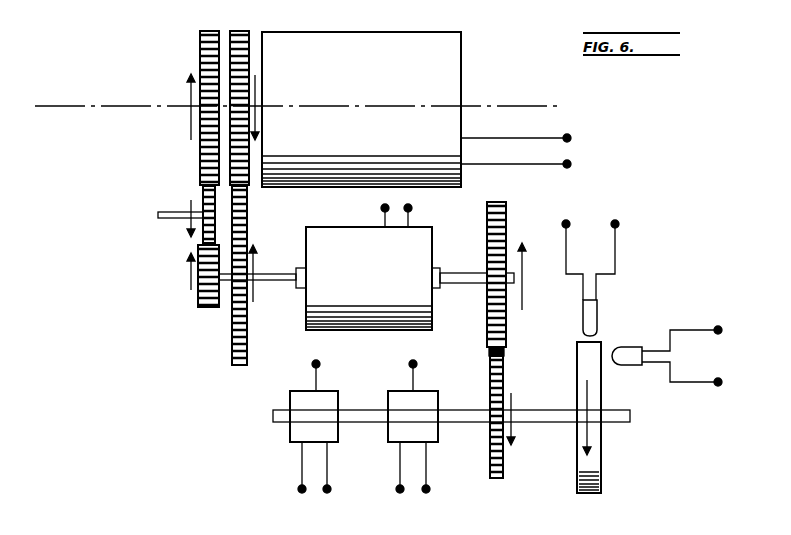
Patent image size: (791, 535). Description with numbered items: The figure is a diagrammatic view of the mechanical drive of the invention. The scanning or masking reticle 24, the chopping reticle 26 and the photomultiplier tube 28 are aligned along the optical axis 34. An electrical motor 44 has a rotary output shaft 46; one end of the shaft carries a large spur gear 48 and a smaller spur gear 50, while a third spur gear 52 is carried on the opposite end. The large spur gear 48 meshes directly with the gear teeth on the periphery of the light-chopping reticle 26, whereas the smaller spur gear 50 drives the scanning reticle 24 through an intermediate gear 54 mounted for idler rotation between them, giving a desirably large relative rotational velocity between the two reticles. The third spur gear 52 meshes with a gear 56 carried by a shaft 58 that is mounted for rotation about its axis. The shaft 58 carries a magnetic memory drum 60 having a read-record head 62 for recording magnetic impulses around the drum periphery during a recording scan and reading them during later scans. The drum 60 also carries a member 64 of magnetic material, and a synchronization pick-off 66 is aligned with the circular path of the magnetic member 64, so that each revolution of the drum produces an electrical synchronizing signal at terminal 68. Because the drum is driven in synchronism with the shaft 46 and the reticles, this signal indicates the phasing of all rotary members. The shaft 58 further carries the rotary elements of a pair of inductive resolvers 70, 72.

The scanning reticle 24 is at (200, 46).
The chopping reticle 26 is at (238, 31).
The photomultiplier tube 28 is at (335, 46).
The optical axis 34 is at (104, 108).
The electrical motor 44 is at (432, 318).
The rotary output shaft 46 is at (277, 280).
The large spur gear 48 is at (247, 358).
The smaller spur gear 50 is at (213, 307).
The third spur gear 52 is at (507, 209).
The intermediate gear 54 is at (203, 194).
The gear 56 is at (505, 466).
The shaft 58 is at (464, 422).
The magnetic memory drum 60 is at (582, 362).
The read-record head 62 is at (597, 321).
The magnetic member 64 is at (602, 480).
The synchronization pick-off 66 is at (634, 365).
The terminal 68 is at (714, 345).
The inductive resolver 70 is at (302, 436).
The inductive resolver 72 is at (396, 432).